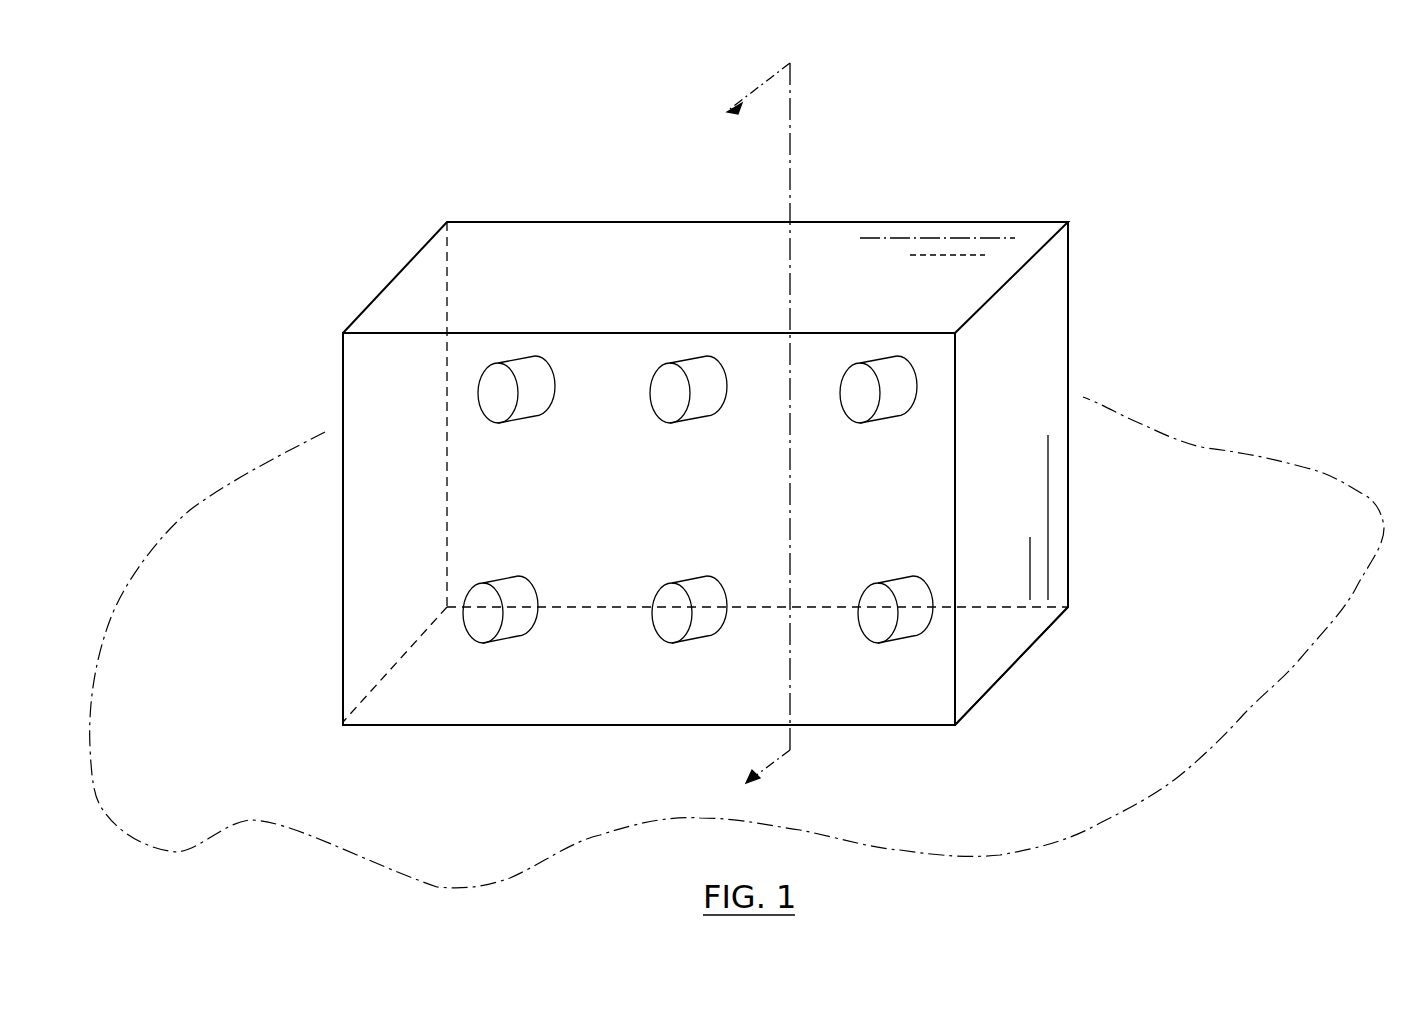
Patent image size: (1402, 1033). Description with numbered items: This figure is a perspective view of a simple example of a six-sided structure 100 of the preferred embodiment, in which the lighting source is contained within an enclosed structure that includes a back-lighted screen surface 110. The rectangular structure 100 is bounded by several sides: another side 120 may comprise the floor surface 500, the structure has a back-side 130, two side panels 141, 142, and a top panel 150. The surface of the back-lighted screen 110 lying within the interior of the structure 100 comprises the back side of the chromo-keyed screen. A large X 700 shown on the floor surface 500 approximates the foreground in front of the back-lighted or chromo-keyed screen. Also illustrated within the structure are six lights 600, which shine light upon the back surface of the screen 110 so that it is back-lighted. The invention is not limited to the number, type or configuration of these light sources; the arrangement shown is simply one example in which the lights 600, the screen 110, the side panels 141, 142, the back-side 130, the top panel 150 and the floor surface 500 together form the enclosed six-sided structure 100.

The six-sided structure 100 is at (1078, 80).
The back-lighted screen surface 110 is at (380, 553).
The side 120 is at (917, 731).
The back-side 130 is at (500, 218).
The side panel 141 is at (1025, 395).
The side panel 142 is at (340, 385).
The top panel 150 is at (852, 276).
The floor surface 500 is at (987, 820).
The lights 600 is at (530, 404).
The large X 700 is at (555, 785).